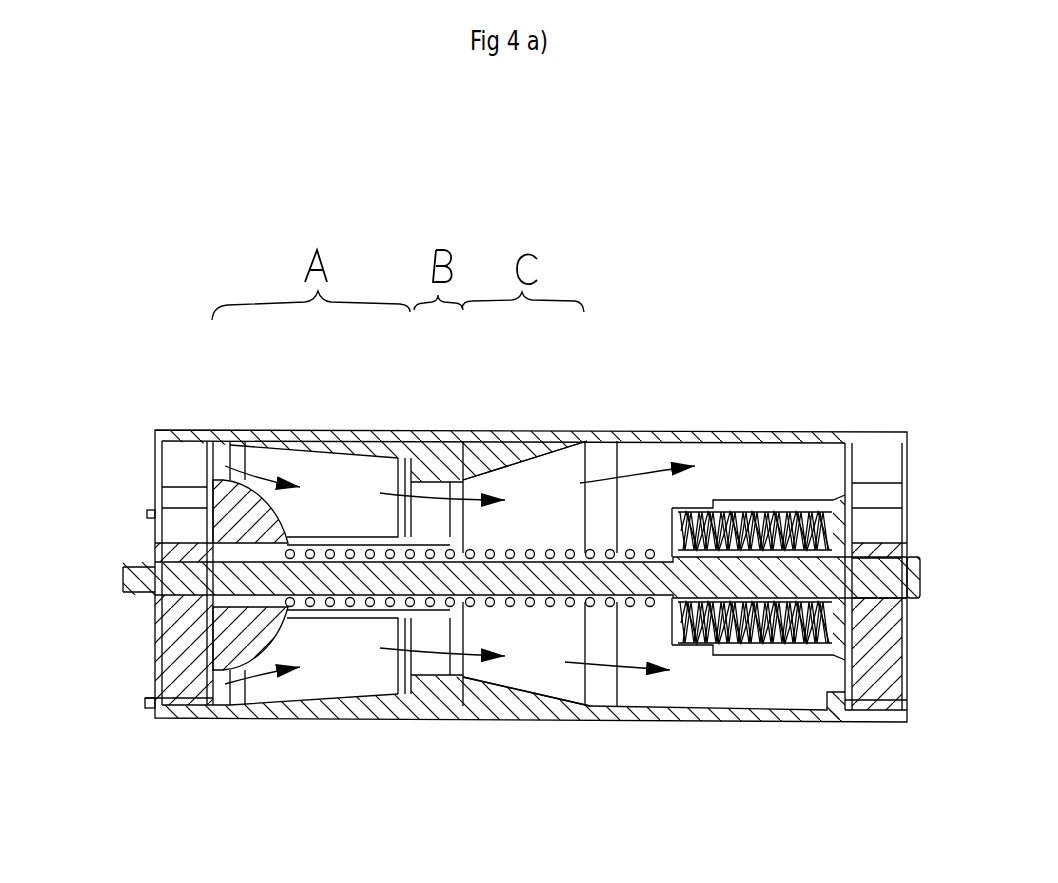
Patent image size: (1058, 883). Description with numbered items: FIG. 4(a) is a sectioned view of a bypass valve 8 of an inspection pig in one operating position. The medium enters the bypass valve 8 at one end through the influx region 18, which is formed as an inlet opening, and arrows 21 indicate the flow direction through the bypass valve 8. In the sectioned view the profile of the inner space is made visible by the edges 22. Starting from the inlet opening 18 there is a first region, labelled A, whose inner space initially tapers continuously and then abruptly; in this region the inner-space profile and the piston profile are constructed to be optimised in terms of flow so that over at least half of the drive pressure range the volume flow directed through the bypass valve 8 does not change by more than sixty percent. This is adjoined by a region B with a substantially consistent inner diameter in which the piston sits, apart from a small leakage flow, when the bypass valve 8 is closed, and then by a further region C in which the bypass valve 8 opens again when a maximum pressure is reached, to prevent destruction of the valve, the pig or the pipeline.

The bypass valve 8 is at (930, 352).
The influx region 18 is at (120, 472).
The arrows 21 is at (627, 790).
The edges 22 is at (525, 833).